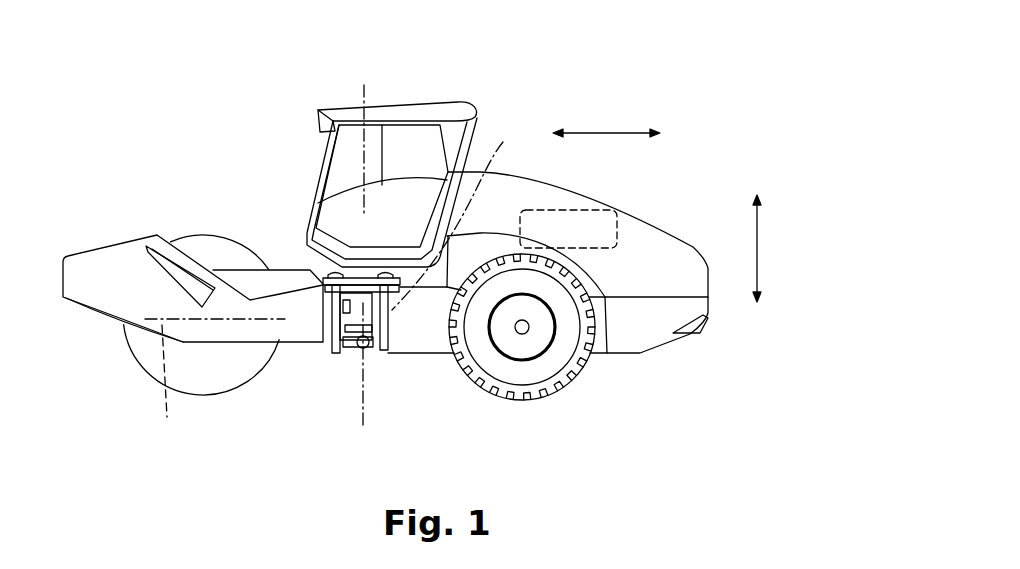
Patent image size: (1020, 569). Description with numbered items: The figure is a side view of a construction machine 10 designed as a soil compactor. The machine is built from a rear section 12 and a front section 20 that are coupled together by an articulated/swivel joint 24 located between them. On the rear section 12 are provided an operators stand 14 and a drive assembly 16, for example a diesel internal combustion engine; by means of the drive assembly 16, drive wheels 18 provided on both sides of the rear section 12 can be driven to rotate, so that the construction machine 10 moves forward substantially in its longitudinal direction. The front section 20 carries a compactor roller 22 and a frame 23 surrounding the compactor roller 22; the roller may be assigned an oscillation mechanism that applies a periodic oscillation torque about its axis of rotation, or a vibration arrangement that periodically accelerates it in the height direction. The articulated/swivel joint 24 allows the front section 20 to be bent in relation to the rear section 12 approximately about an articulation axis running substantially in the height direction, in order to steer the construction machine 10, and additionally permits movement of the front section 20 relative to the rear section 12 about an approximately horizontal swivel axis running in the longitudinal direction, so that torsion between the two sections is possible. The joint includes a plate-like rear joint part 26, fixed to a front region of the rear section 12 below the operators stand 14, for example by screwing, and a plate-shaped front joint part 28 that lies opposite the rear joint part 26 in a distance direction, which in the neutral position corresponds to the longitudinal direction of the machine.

The construction machine 10 is at (712, 98).
The rear section 12 is at (669, 228).
The operators stand 14 is at (455, 103).
The drive assembly 16 is at (618, 218).
The drive wheels 18 is at (583, 373).
The front section 20 is at (93, 250).
The compactor roller 22 is at (203, 233).
The frame 23 is at (105, 302).
The articulated/swivel joint 24 is at (342, 362).
The rear joint part 26 is at (387, 332).
The front joint part 28 is at (332, 340).